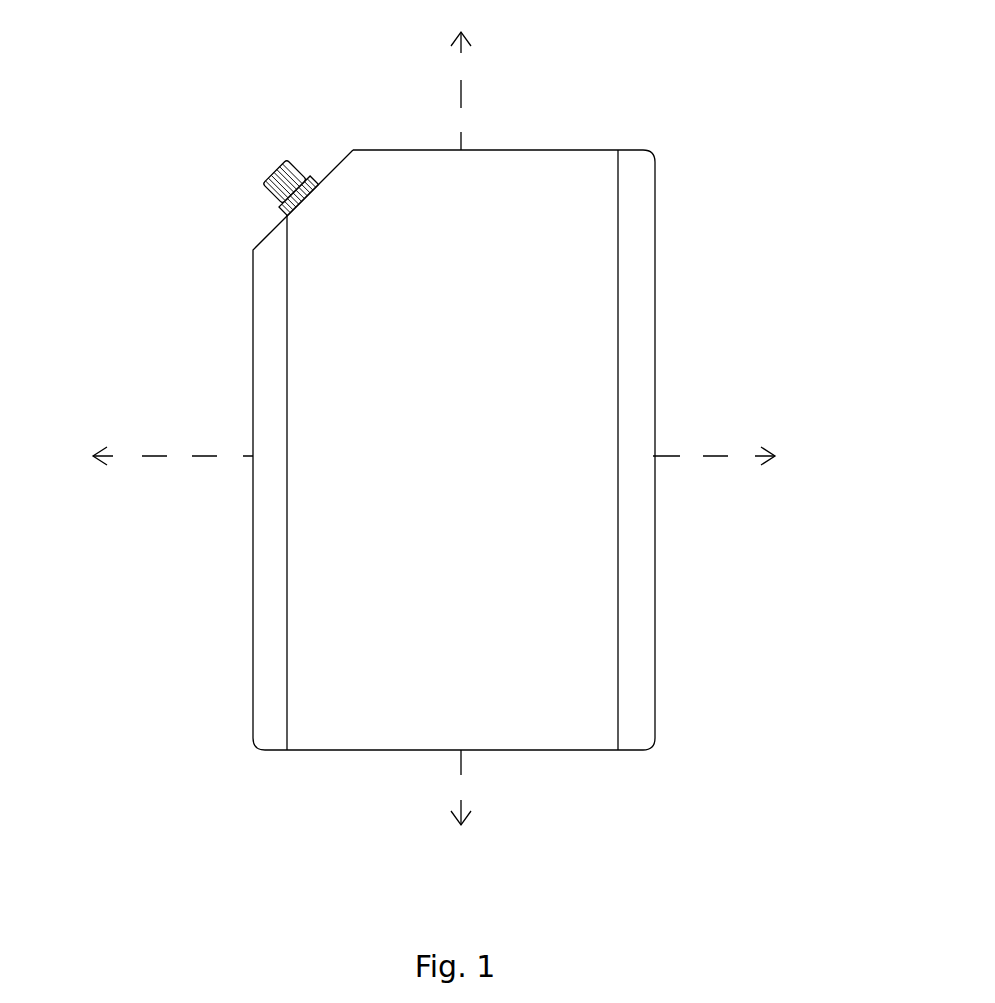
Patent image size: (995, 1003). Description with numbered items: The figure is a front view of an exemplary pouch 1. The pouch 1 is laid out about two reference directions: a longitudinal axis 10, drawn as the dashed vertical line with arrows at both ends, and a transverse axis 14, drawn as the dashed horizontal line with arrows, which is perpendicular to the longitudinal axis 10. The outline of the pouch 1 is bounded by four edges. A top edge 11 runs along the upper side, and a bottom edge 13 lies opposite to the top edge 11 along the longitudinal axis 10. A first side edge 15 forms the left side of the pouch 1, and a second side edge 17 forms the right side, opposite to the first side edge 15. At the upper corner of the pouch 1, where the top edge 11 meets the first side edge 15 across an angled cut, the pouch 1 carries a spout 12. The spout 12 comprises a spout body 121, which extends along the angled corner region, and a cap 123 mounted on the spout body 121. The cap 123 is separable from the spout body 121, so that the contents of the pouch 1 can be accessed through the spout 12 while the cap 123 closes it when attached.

The pouch 1 is at (716, 118).
The longitudinal axis 10 is at (461, 90).
The top edge 11 is at (353, 148).
The spout 12 is at (273, 200).
The spout body 121 is at (287, 213).
The cap 123 is at (273, 170).
The bottom edge 13 is at (592, 750).
The transverse axis 14 is at (718, 456).
The first side edge 15 is at (253, 598).
The second side edge 17 is at (653, 348).